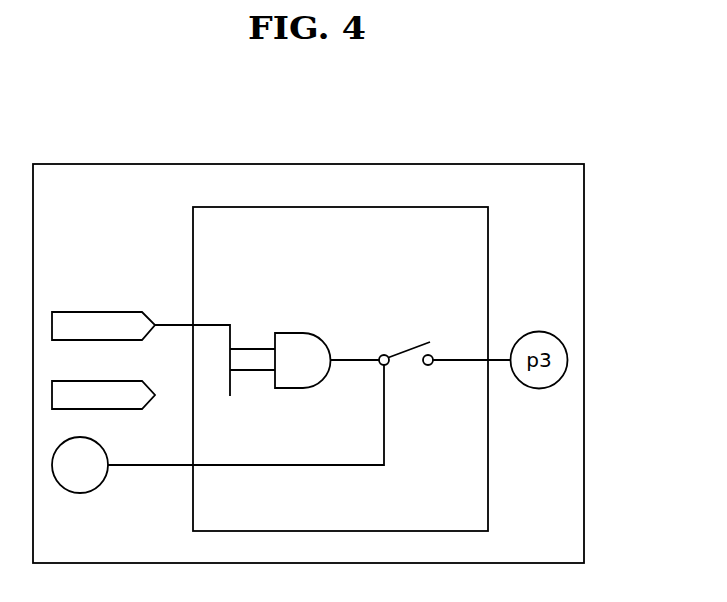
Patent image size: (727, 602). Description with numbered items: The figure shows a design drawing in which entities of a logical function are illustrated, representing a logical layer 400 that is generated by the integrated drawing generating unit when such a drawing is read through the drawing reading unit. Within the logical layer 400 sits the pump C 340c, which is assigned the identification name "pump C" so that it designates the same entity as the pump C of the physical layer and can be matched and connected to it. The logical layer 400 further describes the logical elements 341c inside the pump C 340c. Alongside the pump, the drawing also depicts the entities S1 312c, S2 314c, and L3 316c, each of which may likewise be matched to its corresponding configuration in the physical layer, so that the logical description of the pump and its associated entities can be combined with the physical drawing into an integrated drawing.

The logical layer 400 is at (490, 163).
The pump C 340c is at (342, 207).
The S1 312c is at (97, 309).
The S2 314c is at (95, 380).
The L3 316c is at (107, 450).
The logical elements 341c is at (298, 330).